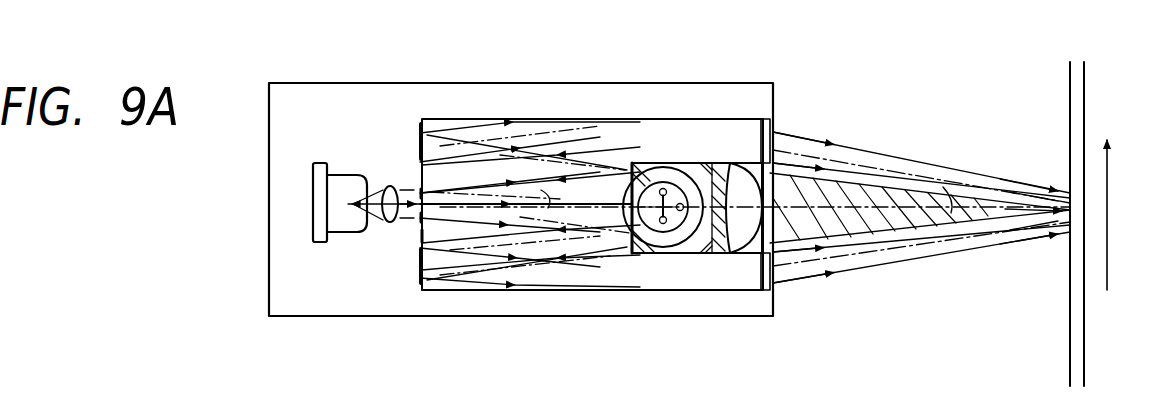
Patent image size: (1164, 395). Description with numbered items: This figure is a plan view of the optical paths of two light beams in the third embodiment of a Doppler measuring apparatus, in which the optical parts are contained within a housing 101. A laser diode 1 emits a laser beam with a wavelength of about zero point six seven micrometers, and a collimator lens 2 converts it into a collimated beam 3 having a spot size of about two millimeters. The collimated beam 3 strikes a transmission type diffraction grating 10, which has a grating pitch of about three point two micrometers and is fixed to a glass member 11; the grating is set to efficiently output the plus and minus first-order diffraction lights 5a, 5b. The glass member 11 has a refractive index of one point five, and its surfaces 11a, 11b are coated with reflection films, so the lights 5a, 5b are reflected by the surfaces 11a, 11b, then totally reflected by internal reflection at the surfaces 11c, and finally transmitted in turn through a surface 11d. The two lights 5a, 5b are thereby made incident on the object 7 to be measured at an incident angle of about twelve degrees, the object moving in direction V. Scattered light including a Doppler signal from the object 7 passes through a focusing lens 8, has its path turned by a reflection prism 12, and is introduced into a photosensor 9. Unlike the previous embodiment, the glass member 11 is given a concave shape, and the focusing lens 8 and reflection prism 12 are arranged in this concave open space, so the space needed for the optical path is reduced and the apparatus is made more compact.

The housing 101 is at (305, 103).
The laser diode 1 is at (345, 222).
The collimator lens 2 is at (390, 186).
The collimated beam 3 is at (418, 222).
The transmission type diffraction grating 10 is at (417, 228).
The glass member 11 is at (602, 273).
The surface 11a is at (643, 163).
The surface 11b is at (420, 150).
The surfaces 11c is at (575, 119).
The surface 11d is at (775, 128).
The reflection prism 12 is at (697, 168).
The photosensor 9 is at (667, 240).
The focusing lens 8 is at (741, 180).
The object to be measured 7 is at (1086, 362).
The first-order diffraction light 5a is at (477, 245).
The first-order diffraction light 5b is at (477, 170).
The moving direction V is at (1120, 215).